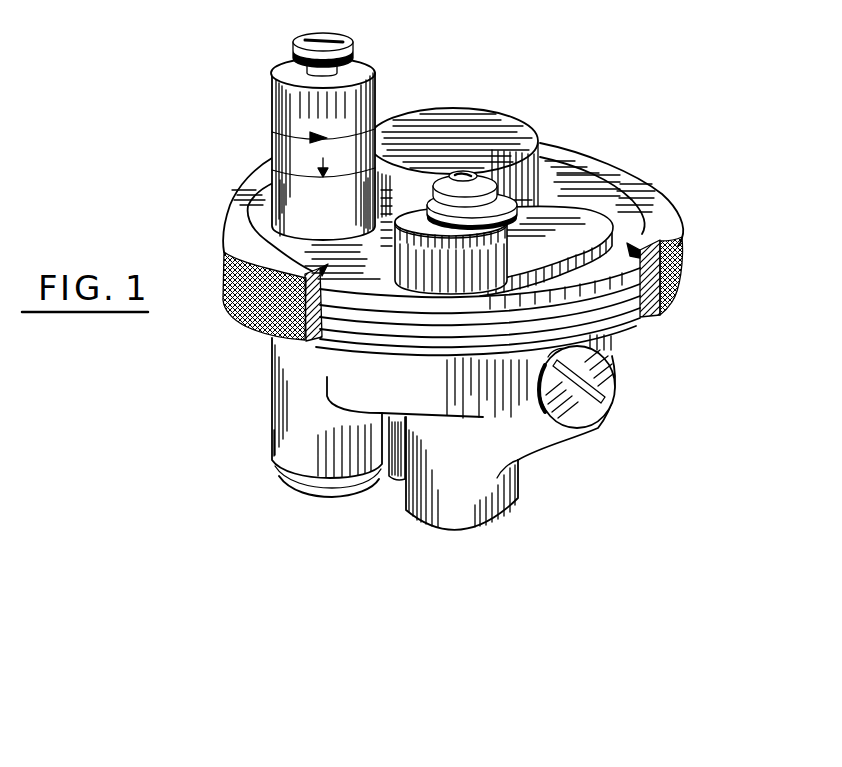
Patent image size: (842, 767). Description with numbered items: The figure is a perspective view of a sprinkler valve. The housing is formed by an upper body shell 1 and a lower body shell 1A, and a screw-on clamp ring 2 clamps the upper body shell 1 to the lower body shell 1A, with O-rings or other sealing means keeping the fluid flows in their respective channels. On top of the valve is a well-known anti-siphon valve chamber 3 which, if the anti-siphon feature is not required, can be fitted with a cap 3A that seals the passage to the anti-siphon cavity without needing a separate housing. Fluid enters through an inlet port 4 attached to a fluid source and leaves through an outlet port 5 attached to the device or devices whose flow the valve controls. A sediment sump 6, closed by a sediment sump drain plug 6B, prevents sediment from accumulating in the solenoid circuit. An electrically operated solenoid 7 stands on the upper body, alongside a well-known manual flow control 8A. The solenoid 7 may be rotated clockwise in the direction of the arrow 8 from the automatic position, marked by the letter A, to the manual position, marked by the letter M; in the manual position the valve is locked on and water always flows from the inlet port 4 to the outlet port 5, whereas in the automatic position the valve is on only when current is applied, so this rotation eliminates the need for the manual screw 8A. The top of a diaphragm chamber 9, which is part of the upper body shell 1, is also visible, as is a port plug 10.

The upper body shell 1 is at (580, 190).
The lower body shell 1A is at (627, 323).
The screw-on clamp ring 2 is at (660, 197).
The anti-siphon valve chamber 3 is at (606, 231).
The cap 3A is at (466, 176).
The inlet port 4 is at (395, 478).
The outlet port 5 is at (473, 527).
The sediment sump 6 is at (293, 447).
The sediment sump drain plug 6B is at (336, 493).
The electrically operated solenoid 7 is at (288, 77).
The arrow 8 is at (310, 137).
The manual flow control 8A is at (304, 38).
The diaphragm chamber 9 is at (483, 117).
The port plug 10 is at (603, 390).